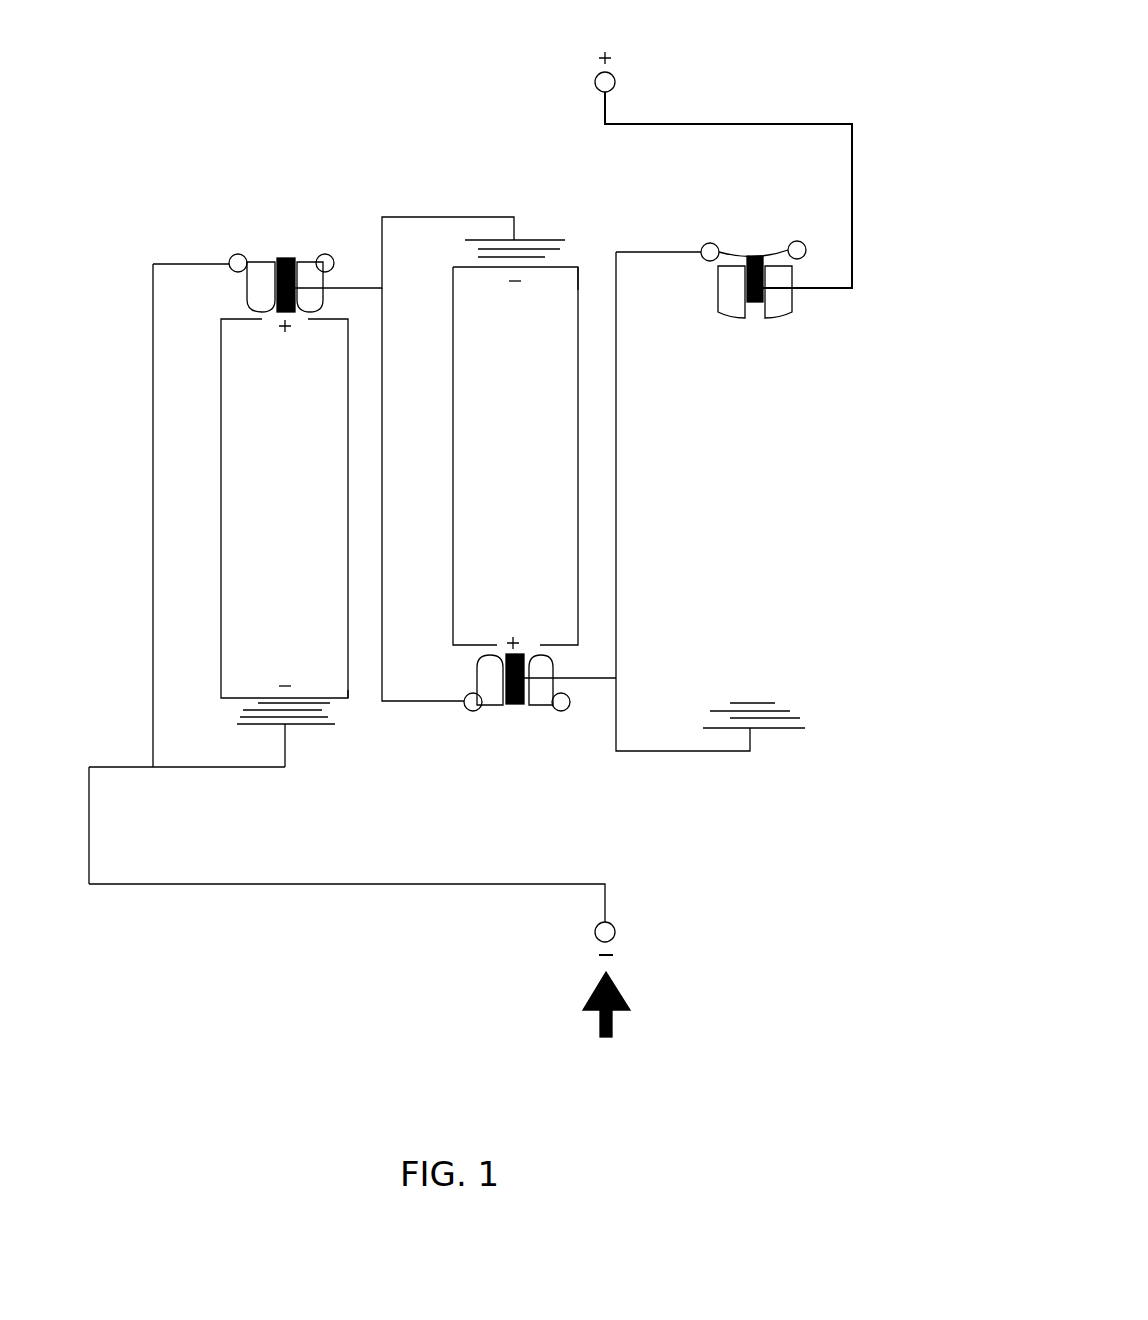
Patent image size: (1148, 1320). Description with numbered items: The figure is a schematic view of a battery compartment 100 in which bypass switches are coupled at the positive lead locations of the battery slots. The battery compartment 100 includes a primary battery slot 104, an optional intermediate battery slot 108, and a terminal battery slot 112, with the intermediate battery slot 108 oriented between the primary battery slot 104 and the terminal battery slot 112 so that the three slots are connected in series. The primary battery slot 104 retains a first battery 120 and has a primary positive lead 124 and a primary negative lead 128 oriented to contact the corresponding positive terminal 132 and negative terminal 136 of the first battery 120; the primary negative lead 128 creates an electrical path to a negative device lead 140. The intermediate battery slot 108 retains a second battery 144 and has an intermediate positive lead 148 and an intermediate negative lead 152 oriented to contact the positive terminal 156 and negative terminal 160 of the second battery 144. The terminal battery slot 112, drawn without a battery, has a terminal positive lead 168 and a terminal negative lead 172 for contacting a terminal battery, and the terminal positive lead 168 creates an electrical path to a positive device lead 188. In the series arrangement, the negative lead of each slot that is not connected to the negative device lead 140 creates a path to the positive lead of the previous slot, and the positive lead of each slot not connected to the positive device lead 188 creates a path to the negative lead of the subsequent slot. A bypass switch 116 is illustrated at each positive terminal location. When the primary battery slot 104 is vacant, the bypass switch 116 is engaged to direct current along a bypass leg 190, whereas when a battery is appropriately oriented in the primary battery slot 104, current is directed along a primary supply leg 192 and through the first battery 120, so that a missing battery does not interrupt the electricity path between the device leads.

The battery compartment 100 is at (247, 190).
The primary battery slot 104 is at (200, 518).
The intermediate battery slot 108 is at (475, 200).
The terminal battery slot 112 is at (810, 605).
The bypass switch 116 is at (225, 298).
The first battery 120 is at (304, 494).
The primary positive lead 124 is at (280, 305).
The primary negative lead 128 is at (240, 723).
The positive terminal 132 is at (288, 332).
The negative terminal 136 is at (325, 697).
The negative device lead 140 is at (300, 885).
The second battery 144 is at (536, 469).
The intermediate positive lead 148 is at (519, 693).
The intermediate negative lead 152 is at (528, 238).
The positive terminal 156 is at (497, 650).
The negative terminal 160 is at (590, 275).
The terminal positive lead 168 is at (755, 300).
The terminal negative lead 172 is at (782, 713).
The positive device lead 188 is at (855, 212).
The bypass leg 190 is at (150, 612).
The primary supply leg 192 is at (222, 768).